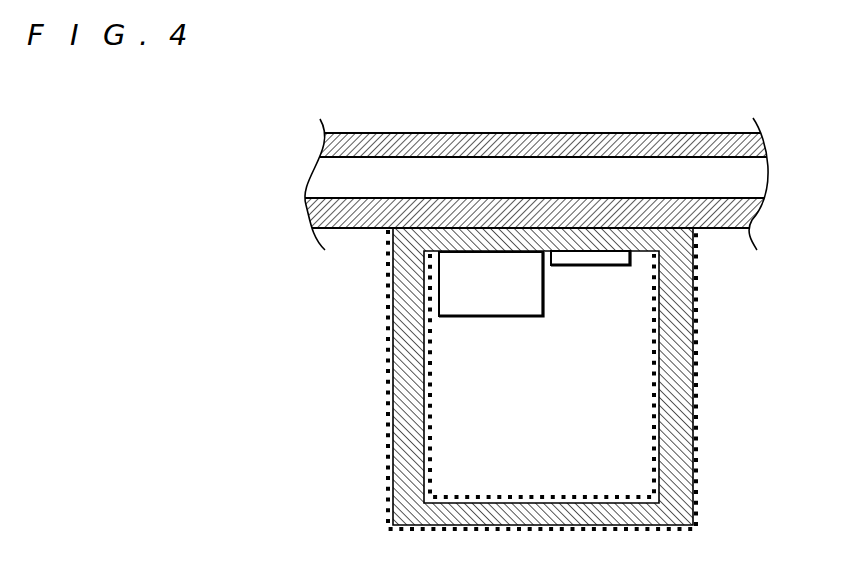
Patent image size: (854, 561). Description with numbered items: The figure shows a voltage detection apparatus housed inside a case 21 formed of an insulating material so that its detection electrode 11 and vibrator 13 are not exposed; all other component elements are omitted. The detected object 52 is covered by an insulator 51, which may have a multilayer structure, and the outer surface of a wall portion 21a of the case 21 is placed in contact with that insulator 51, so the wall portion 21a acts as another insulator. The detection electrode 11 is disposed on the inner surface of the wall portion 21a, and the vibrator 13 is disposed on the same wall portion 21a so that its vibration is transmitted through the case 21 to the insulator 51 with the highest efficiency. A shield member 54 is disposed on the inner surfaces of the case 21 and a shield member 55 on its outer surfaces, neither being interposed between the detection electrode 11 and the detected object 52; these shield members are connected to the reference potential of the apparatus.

The detection electrode 11 is at (577, 266).
The vibrator 13 is at (500, 317).
The case 21 is at (405, 423).
The wall portion 21a is at (643, 253).
The insulator 51 is at (328, 143).
The detected object 52 is at (327, 180).
The shield member 54 is at (654, 420).
The shield member 55 is at (698, 370).